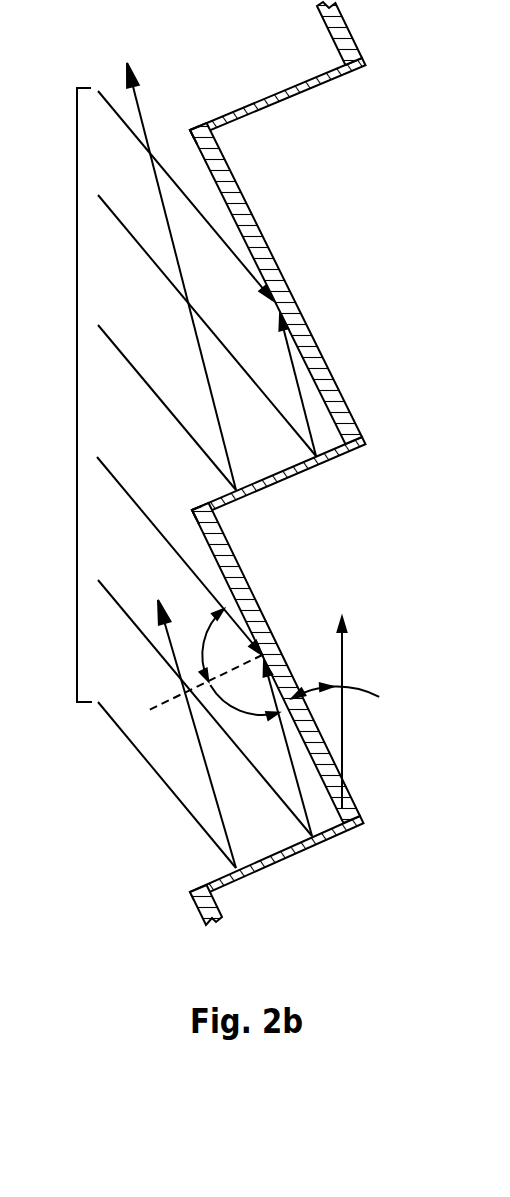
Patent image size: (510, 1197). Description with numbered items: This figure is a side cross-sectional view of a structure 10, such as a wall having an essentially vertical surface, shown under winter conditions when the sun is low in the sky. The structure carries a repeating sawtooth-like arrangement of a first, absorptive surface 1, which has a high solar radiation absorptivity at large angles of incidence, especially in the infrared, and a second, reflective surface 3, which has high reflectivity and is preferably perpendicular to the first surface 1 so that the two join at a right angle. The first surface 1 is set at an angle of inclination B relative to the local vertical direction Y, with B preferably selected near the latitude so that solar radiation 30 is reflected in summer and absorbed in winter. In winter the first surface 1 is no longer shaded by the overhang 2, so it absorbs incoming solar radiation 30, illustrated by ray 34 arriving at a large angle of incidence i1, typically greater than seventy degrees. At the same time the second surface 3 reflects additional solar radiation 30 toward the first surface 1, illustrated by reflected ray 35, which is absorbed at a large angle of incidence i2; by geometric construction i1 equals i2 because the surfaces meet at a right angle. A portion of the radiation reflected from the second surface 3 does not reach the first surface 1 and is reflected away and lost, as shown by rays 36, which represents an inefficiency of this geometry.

The first absorptive surface 1 is at (258, 258).
The overhang 2 is at (217, 135).
The second reflective surface 3 is at (302, 88).
The structure 10 is at (357, 204).
The solar radiation 30 is at (77, 388).
The ray 34 is at (232, 256).
The reflected ray 35 is at (291, 380).
The rays 36 is at (140, 113).
The local vertical direction Y is at (340, 697).
The angle of inclination B is at (347, 700).
The angle of incidence i1 is at (204, 639).
The angle of incidence i2 is at (244, 718).